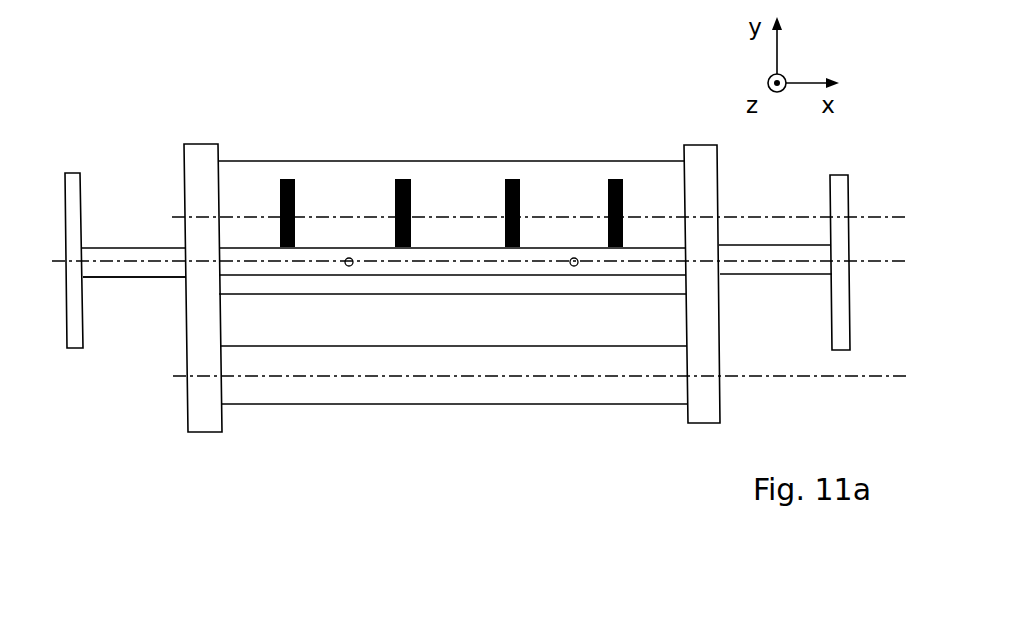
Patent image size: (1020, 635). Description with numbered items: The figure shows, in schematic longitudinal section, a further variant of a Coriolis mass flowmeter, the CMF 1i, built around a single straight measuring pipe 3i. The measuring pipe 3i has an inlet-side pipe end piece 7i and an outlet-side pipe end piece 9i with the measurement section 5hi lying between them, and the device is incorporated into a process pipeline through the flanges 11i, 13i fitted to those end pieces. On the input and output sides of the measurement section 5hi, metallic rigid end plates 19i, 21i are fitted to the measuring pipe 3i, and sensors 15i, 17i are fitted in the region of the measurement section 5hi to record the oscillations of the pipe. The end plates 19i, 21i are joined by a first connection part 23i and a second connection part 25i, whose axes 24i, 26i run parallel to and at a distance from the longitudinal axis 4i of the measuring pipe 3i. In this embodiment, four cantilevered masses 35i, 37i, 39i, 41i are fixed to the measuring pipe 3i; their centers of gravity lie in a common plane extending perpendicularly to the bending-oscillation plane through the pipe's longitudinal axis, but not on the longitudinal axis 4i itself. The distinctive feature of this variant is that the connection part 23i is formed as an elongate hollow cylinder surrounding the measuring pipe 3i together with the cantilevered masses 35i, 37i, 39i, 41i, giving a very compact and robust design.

The CMF 1i is at (452, 382).
The measuring pipe 3i is at (166, 285).
The longitudinal axis of the measuring pipe 4i is at (490, 278).
The measurement section 5hi is at (297, 272).
The inlet-side pipe end piece 7i is at (135, 260).
The outlet-side pipe end piece 9i is at (750, 258).
The inlet-side flange 11i is at (80, 180).
The outlet-side flange 13i is at (845, 332).
The sensor 15i is at (350, 258).
The sensor 17i is at (573, 258).
The end plate 19i is at (203, 124).
The end plate 21i is at (692, 143).
The first connection part 23i is at (320, 162).
The axis of the first connection part 24i is at (889, 219).
The second connection part 25i is at (272, 405).
The axis of the second connection part 26i is at (553, 391).
The cantilevered mass 35i is at (283, 179).
The cantilevered mass 37i is at (410, 177).
The cantilevered mass 39i is at (613, 179).
The cantilevered mass 41i is at (510, 180).